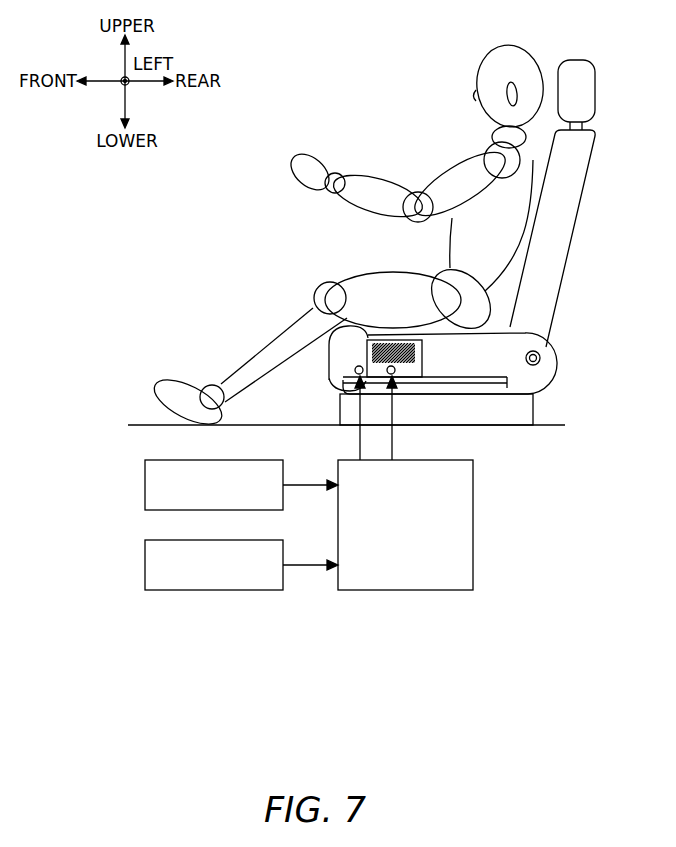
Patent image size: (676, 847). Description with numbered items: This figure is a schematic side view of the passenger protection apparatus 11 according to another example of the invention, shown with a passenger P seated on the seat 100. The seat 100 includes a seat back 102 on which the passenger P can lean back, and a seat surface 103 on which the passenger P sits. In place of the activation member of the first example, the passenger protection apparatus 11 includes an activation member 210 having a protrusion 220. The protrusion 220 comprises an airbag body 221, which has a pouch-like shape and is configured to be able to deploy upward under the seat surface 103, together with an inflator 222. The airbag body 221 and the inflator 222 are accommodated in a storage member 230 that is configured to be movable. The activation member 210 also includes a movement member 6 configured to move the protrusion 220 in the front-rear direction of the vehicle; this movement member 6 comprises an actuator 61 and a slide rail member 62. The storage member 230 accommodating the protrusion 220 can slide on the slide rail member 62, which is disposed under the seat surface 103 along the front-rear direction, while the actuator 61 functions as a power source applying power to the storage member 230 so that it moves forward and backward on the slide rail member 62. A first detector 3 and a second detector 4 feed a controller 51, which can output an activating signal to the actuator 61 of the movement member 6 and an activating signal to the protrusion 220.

The passenger P is at (402, 146).
The passenger protection apparatus 11 is at (530, 460).
The seat 100 is at (566, 294).
The seat back 102 is at (577, 172).
The seat surface 103 is at (512, 331).
The activation member 210 is at (309, 290).
The storage member 230 is at (367, 331).
The protrusion 220 is at (271, 307).
The airbag body 221 is at (366, 372).
The inflator 222 is at (336, 357).
The movement member 6 is at (239, 390).
The actuator 61 is at (355, 372).
The slide rail member 62 is at (388, 375).
The controller 51 is at (403, 590).
The first detector 3 is at (145, 482).
The second detector 4 is at (145, 560).